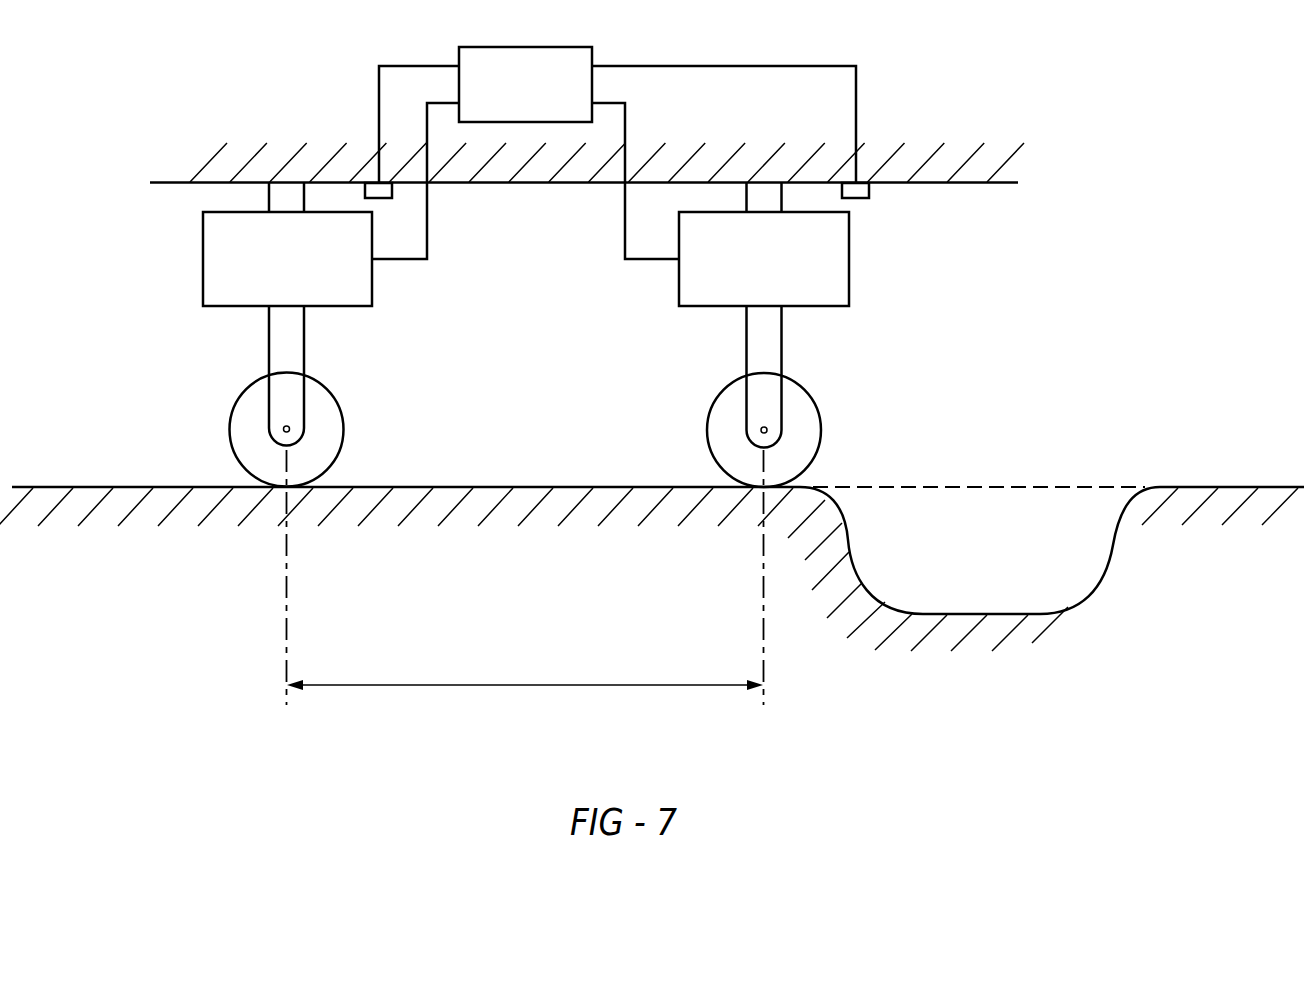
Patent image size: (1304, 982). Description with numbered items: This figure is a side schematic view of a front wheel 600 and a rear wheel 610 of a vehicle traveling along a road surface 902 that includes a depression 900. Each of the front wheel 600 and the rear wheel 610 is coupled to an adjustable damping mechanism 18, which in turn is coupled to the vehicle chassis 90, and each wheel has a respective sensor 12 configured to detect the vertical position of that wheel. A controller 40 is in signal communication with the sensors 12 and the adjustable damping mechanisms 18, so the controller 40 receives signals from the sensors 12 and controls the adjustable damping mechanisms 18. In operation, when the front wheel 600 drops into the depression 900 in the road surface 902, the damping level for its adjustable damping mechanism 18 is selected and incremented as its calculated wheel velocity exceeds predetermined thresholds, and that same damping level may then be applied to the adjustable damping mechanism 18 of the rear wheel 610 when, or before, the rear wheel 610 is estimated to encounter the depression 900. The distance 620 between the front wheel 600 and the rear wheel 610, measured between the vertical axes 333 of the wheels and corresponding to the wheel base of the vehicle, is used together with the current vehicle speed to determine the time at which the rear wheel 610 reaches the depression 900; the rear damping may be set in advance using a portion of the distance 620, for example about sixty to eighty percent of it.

The controller 40 is at (539, 98).
The vehicle chassis 90 is at (969, 112).
The sensor 12 is at (385, 199).
The adjustable damping mechanism 18 is at (213, 265).
The rear wheel 610 is at (240, 398).
The front wheel 600 is at (818, 400).
The road surface 902 is at (1203, 487).
The depression 900 is at (987, 504).
The vertical axes 333 is at (286, 597).
The distance 620 is at (525, 672).